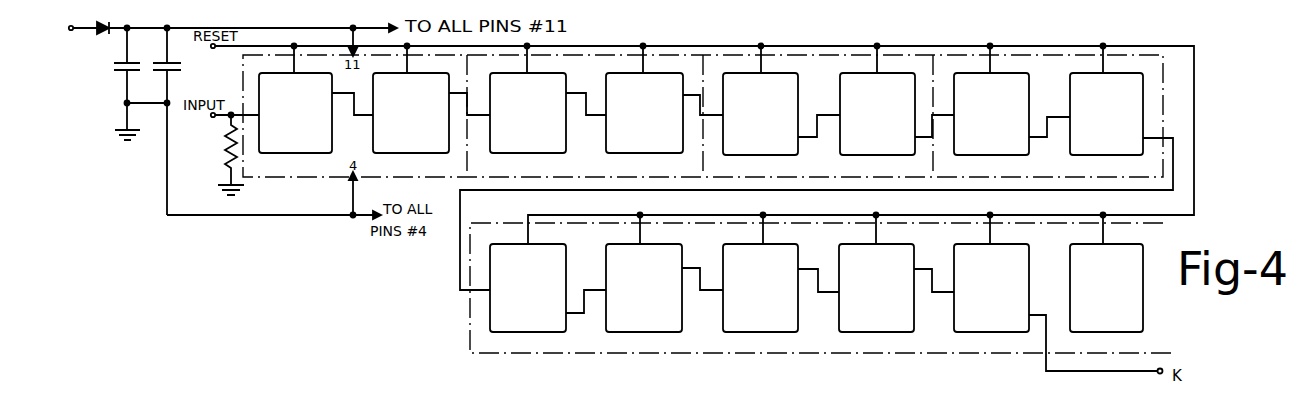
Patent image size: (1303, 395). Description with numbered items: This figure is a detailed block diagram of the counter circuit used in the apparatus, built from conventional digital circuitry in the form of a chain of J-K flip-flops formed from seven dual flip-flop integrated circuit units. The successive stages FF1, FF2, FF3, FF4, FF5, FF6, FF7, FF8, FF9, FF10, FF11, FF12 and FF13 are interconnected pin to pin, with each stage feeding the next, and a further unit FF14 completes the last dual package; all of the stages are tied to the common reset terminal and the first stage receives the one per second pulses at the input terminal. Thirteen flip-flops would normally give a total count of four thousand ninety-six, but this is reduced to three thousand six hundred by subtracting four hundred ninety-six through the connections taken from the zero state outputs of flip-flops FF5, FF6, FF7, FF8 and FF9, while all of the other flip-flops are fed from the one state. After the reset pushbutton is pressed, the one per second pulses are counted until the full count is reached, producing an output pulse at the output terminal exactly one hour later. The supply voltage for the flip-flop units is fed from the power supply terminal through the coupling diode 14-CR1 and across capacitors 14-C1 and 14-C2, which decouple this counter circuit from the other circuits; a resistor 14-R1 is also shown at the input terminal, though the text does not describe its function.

The coupling diode 14-CR1 is at (96, 30).
The capacitor 14-C1 is at (100, 84).
The capacitor 14-C2 is at (184, 121).
The resistor R1 (110 ohm) 14-R1 is at (239, 155).
The flip-flop FF1 is at (295, 113).
The flip-flop FF2 is at (411, 113).
The flip-flop FF3 is at (528, 113).
The flip-flop FF4 is at (644, 113).
The flip-flop FF5 is at (760, 114).
The flip-flop FF6 is at (877, 114).
The flip-flop FF7 is at (991, 114).
The flip-flop FF8 is at (1106, 114).
The flip-flop FF9 is at (528, 288).
The flip-flop FF10 is at (644, 288).
The flip-flop FF11 is at (760, 288).
The flip-flop FF12 is at (876, 288).
The flip-flop FF13 is at (991, 288).
The flip-flop FF14 is at (1106, 288).